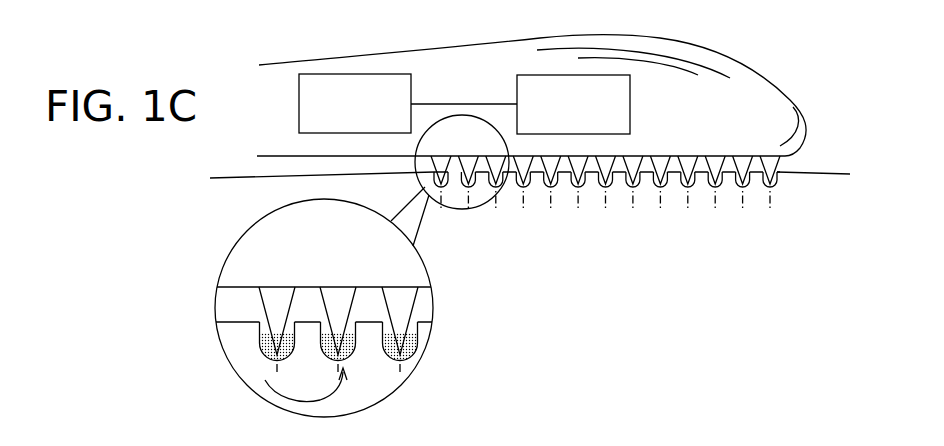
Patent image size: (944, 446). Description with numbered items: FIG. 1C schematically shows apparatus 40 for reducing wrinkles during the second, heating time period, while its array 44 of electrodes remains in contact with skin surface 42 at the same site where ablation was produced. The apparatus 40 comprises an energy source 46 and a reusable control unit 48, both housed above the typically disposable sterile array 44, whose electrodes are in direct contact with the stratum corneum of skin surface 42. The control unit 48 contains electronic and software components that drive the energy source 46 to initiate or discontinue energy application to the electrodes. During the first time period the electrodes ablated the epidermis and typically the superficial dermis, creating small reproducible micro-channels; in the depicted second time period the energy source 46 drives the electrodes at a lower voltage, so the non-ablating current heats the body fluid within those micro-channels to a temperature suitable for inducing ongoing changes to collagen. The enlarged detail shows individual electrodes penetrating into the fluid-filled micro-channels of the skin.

The apparatus 40 is at (755, 62).
The skin surface 42 is at (261, 178).
The array of electrodes 44 is at (561, 141).
The energy source 46 is at (547, 75).
The control unit 48 is at (352, 74).